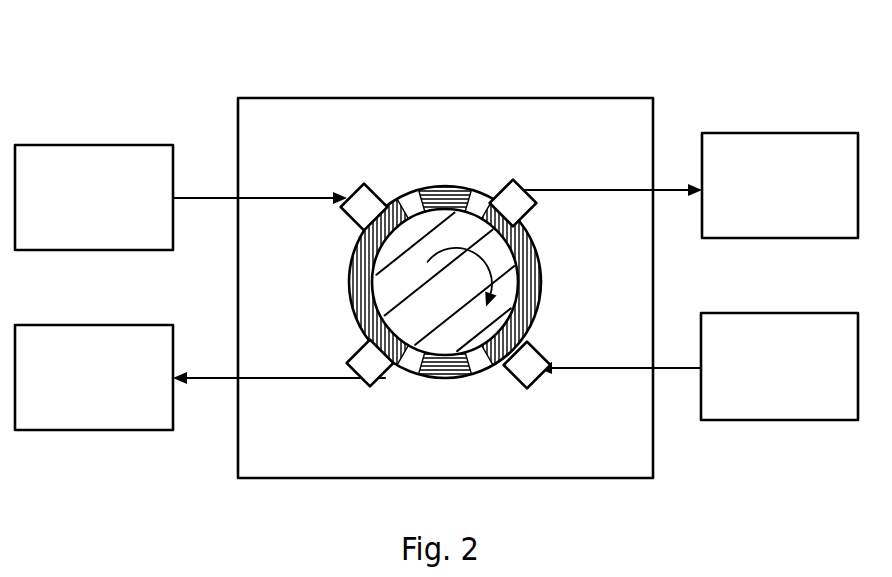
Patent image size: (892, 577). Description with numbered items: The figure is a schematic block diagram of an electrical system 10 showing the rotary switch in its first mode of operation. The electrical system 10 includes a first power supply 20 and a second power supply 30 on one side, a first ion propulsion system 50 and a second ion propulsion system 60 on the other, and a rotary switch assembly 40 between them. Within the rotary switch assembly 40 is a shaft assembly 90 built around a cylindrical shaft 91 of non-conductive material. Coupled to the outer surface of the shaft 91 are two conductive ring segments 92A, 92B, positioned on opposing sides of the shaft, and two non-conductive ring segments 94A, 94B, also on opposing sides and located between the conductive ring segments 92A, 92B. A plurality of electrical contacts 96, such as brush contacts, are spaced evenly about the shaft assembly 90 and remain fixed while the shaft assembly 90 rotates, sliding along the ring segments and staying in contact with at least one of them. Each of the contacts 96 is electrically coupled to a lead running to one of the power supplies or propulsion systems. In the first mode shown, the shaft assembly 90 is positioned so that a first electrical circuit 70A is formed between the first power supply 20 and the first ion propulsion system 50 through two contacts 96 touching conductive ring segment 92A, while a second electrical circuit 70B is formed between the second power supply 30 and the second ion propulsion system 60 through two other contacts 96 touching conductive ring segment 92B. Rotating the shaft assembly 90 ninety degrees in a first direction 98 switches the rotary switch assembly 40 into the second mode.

The electrical system 10 is at (714, 47).
The first power supply 20 is at (82, 233).
The second power supply 30 is at (768, 401).
The rotary switch assembly 40 is at (433, 147).
The first ion propulsion system 50 is at (82, 425).
The second ion propulsion system 60 is at (768, 231).
The first electrical circuit 70A is at (270, 197).
The second electrical circuit 70B is at (590, 189).
The shaft assembly 90 is at (336, 302).
The cylindrical shaft 91 is at (412, 313).
The conductive ring segment 92A is at (350, 282).
The conductive ring segment 92B is at (539, 260).
The non-conductive ring segment 94A is at (447, 379).
The non-conductive ring segment 94B is at (448, 190).
The electrical contacts 96 is at (370, 191).
The first direction 98 is at (465, 266).